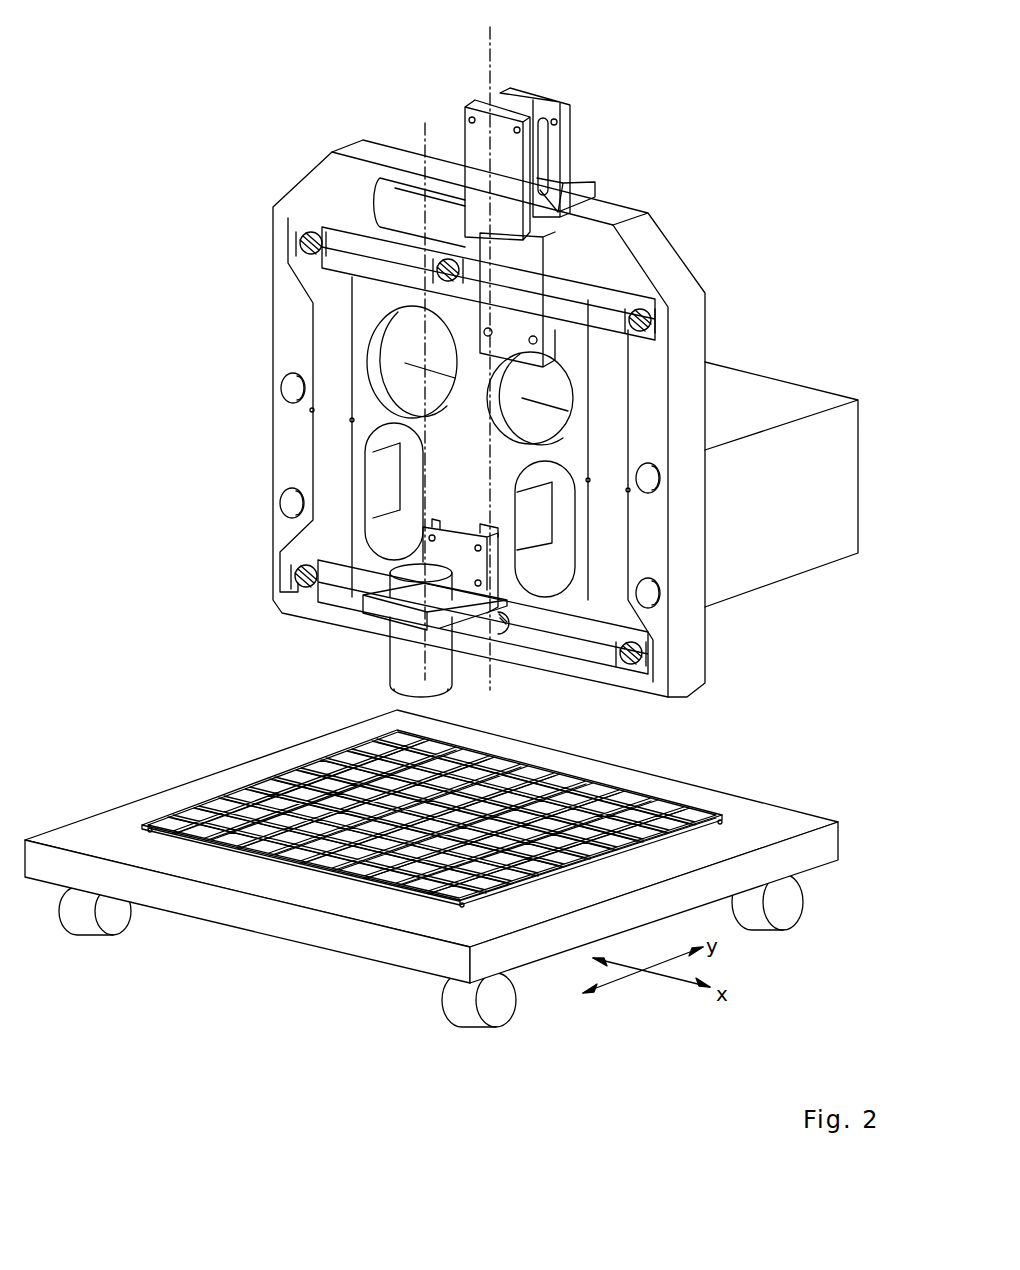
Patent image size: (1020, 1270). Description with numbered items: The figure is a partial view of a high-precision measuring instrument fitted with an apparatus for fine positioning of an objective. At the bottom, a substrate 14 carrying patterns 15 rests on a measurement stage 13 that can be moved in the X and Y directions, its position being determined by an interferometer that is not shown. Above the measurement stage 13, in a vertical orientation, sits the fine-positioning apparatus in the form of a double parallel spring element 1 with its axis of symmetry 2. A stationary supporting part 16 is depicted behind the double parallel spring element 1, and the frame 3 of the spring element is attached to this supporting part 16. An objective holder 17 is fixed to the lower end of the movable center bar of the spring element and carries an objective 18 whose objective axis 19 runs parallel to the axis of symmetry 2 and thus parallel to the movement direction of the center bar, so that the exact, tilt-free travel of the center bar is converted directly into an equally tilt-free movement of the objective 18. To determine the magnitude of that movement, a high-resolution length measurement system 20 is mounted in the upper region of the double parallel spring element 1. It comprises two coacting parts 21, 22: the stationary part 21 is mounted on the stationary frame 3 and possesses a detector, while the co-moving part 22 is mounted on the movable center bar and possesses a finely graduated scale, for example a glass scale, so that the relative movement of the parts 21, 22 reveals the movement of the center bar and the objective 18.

The double parallel spring element 1 is at (703, 317).
The axis of symmetry 2 is at (493, 40).
The frame 3 is at (658, 378).
The measurement stage 13 is at (797, 855).
The substrate 14 is at (730, 807).
The patterns 15 is at (655, 797).
The stationary supporting part 16 is at (782, 393).
The objective holder 17 is at (453, 610).
The objective 18 is at (400, 647).
The objective axis 19 is at (427, 143).
The high-resolution length measurement system 20 is at (543, 95).
The stationary part 21 is at (543, 110).
The co-moving part 22 is at (480, 118).